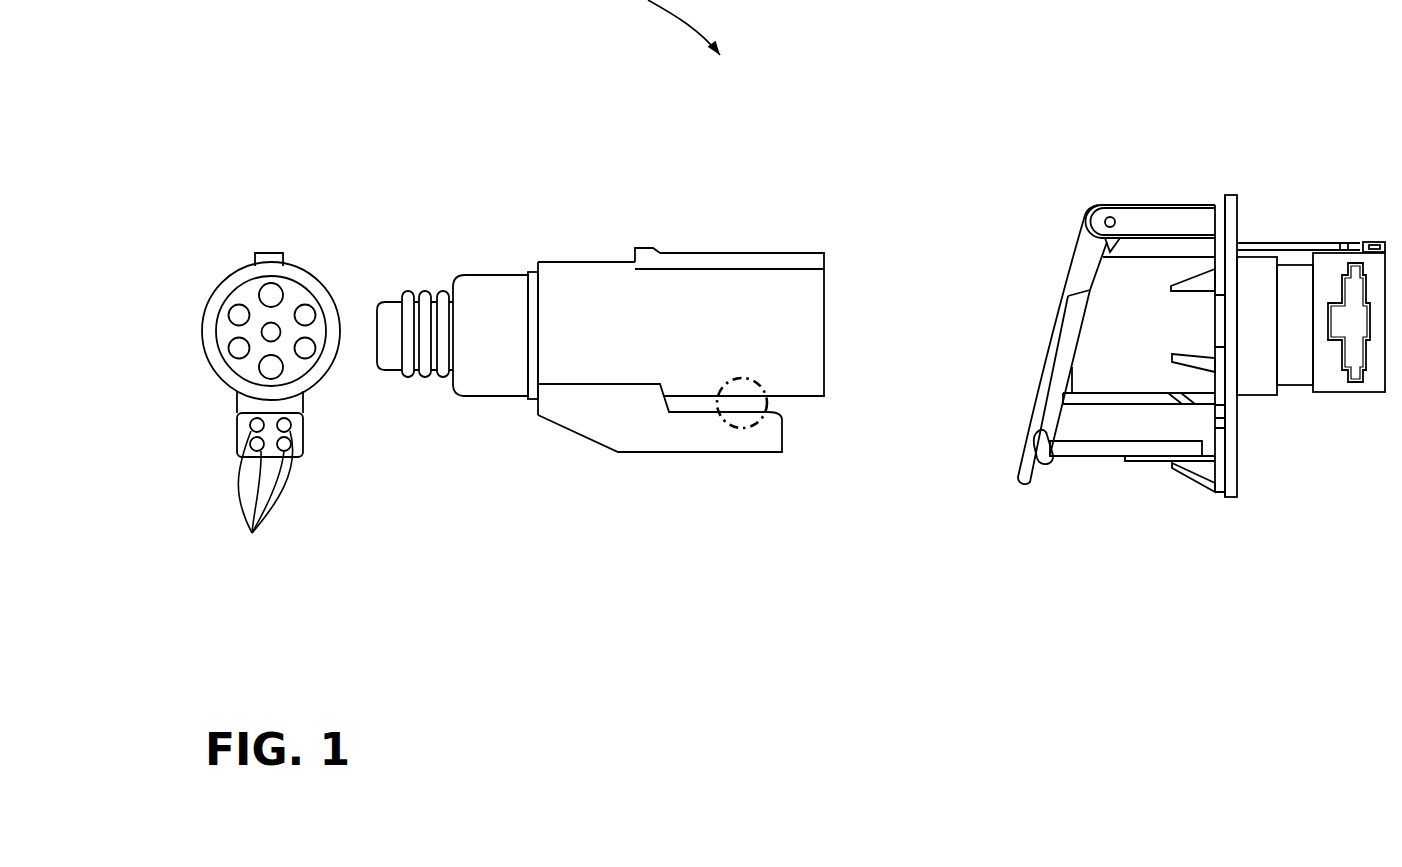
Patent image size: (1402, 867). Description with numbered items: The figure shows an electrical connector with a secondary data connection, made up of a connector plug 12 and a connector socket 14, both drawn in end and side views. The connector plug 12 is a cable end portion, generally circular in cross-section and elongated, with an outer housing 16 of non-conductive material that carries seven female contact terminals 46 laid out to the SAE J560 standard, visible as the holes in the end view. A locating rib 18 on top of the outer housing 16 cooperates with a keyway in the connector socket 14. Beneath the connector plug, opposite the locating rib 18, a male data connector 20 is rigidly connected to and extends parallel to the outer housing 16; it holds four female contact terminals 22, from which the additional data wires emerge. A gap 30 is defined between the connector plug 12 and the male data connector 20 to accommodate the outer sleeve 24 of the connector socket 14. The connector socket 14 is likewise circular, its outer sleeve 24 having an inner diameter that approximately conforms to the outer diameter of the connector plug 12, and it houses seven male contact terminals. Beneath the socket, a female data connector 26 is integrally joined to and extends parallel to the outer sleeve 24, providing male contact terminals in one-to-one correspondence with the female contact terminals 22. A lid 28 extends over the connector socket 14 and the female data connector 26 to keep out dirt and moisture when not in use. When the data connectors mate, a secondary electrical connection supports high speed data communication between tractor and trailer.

The connector plug 12 is at (511, 349).
The connector socket 14 is at (1173, 287).
The outer housing 16 is at (238, 272).
The locating rib 18 is at (273, 253).
The male data connector 20 is at (670, 453).
The female contact terminals 22 is at (252, 533).
The outer sleeve 24 is at (1150, 285).
The female data connector 26 is at (1073, 432).
The lid 28 is at (1053, 340).
The gap 30 is at (770, 401).
The terminals 46 is at (230, 347).